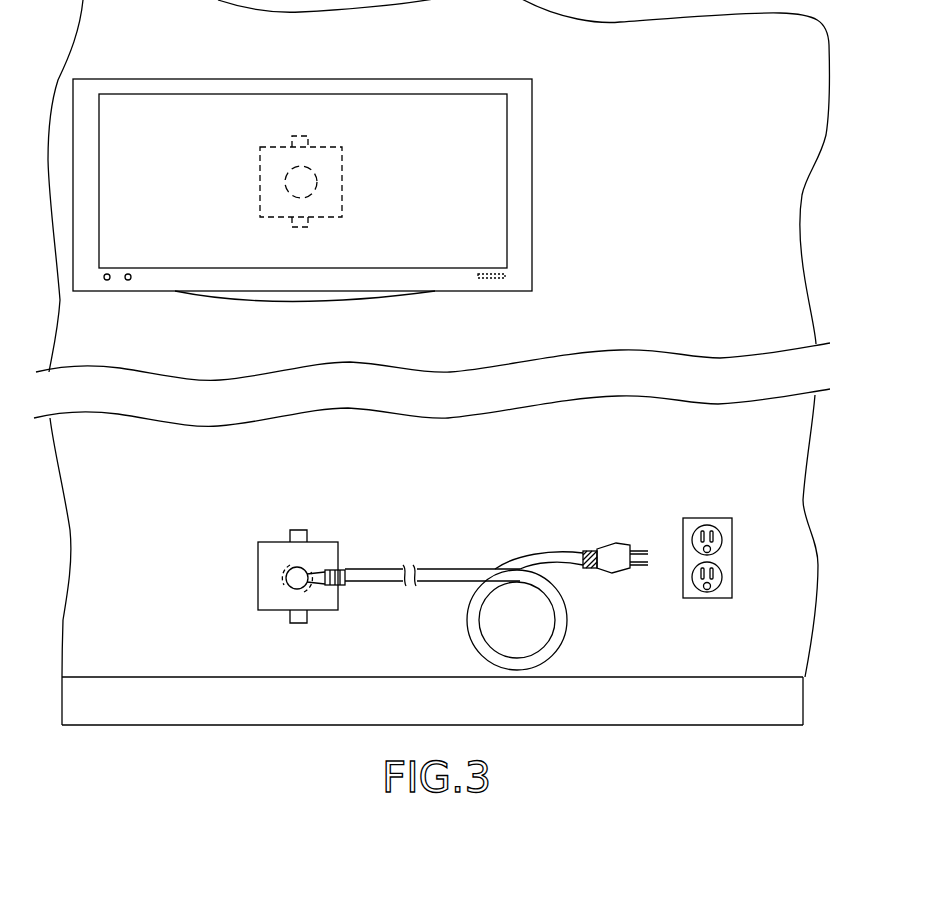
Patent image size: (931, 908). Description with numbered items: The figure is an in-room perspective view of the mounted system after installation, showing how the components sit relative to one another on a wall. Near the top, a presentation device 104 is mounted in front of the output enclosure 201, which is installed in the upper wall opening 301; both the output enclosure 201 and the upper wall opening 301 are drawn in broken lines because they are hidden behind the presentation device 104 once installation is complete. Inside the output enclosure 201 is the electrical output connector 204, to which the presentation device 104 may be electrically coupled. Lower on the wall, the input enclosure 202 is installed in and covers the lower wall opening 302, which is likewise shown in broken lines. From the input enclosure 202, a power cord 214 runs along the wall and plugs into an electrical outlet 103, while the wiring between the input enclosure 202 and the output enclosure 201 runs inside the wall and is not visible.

The presentation device 104 is at (532, 178).
The output enclosure 201 is at (289, 182).
The electrical output connector 204 is at (283, 177).
The upper wall opening 301 is at (270, 213).
The input enclosure 202 is at (277, 563).
The lower wall opening 302 is at (309, 555).
The power cord 214 is at (425, 569).
The electrical outlet 103 is at (732, 558).